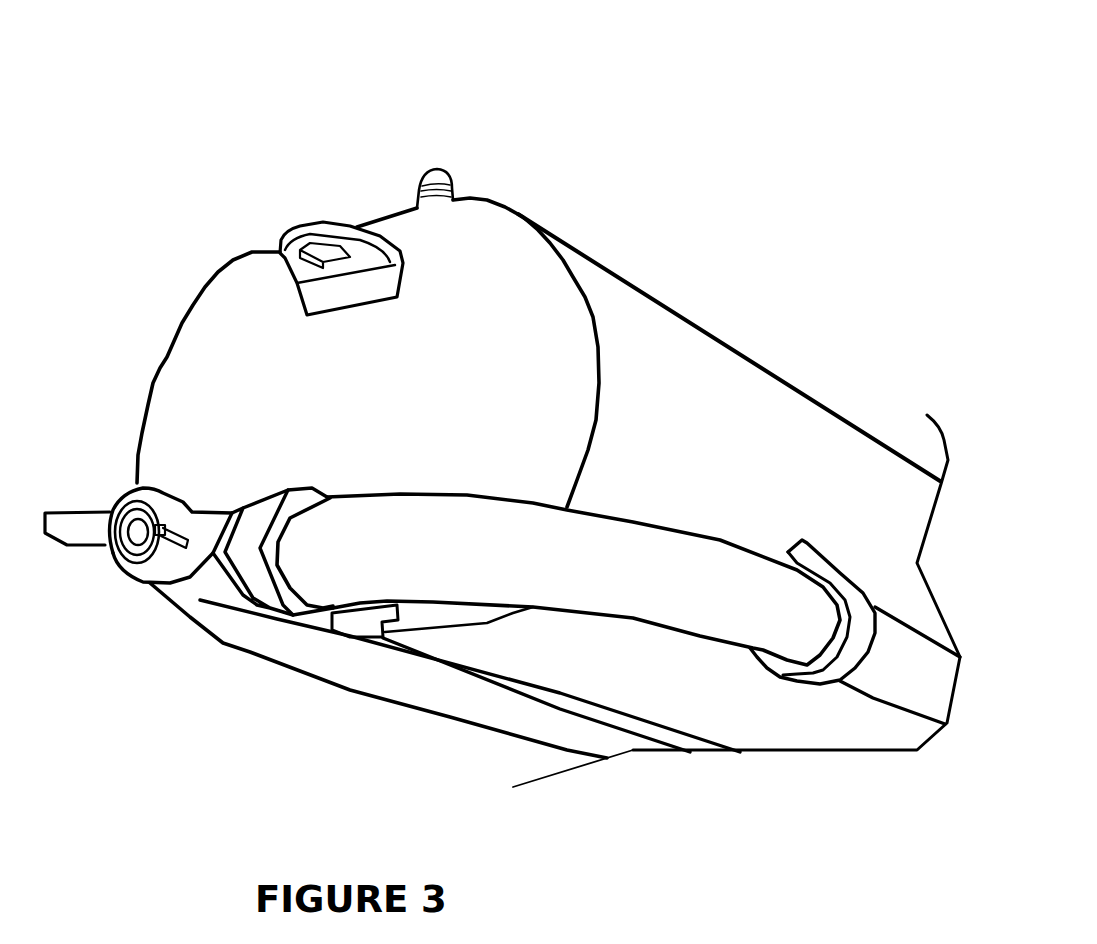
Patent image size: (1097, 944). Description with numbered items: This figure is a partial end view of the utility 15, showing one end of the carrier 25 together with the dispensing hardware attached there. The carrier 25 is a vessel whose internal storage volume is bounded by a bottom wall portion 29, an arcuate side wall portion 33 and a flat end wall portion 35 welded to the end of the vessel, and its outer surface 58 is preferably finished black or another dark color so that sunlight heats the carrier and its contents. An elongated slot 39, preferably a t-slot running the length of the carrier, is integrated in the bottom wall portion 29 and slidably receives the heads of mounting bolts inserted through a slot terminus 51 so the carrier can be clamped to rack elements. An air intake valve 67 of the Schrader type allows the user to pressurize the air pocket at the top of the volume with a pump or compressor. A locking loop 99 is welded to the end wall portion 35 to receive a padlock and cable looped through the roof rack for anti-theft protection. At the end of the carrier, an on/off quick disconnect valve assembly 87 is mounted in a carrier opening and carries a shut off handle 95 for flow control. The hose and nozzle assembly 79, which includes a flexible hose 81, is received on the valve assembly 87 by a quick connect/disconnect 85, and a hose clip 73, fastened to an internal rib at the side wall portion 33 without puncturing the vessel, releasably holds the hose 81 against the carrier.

The utility 15 is at (524, 81).
The carrier 25 is at (770, 393).
The bottom wall portion 29 is at (513, 730).
The arcuate side wall portion 33 is at (633, 333).
The end wall portion 35 is at (222, 358).
The elongated slot 39 is at (603, 717).
The slot terminus 51 is at (355, 613).
The outer surface 58 is at (608, 295).
The air intake valve 67 is at (427, 175).
The hose clip 73 is at (857, 600).
The hose and nozzle assembly 79 is at (612, 545).
The flexible hose 81 is at (702, 607).
The quick connect/disconnect 85 is at (280, 612).
The quick disconnect valve assembly 87 is at (210, 585).
The shut off handle 95 is at (73, 522).
The locking loop 99 is at (283, 232).